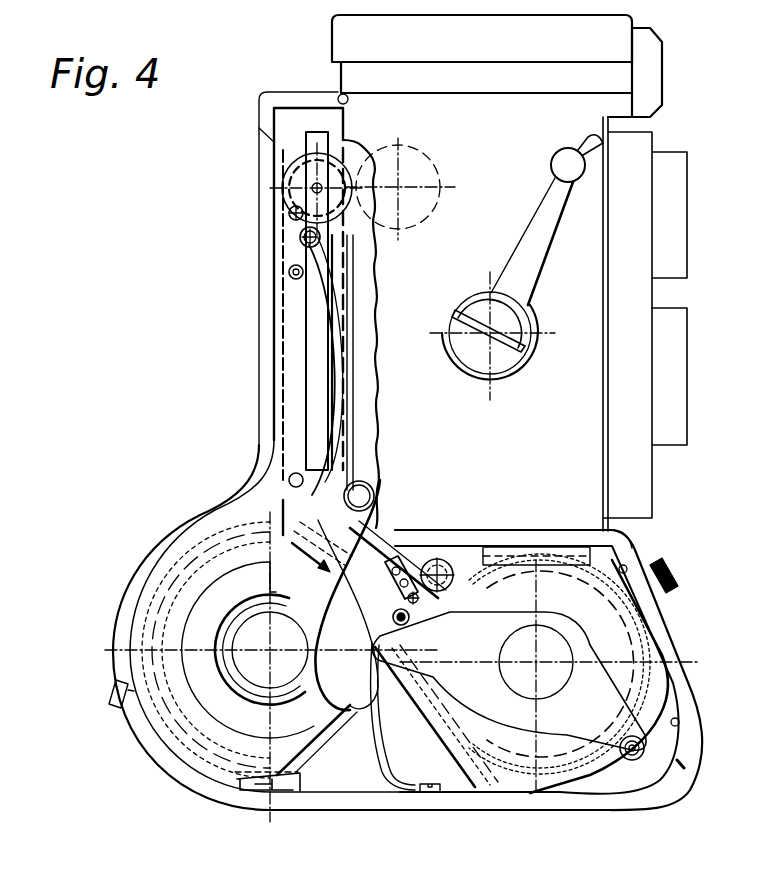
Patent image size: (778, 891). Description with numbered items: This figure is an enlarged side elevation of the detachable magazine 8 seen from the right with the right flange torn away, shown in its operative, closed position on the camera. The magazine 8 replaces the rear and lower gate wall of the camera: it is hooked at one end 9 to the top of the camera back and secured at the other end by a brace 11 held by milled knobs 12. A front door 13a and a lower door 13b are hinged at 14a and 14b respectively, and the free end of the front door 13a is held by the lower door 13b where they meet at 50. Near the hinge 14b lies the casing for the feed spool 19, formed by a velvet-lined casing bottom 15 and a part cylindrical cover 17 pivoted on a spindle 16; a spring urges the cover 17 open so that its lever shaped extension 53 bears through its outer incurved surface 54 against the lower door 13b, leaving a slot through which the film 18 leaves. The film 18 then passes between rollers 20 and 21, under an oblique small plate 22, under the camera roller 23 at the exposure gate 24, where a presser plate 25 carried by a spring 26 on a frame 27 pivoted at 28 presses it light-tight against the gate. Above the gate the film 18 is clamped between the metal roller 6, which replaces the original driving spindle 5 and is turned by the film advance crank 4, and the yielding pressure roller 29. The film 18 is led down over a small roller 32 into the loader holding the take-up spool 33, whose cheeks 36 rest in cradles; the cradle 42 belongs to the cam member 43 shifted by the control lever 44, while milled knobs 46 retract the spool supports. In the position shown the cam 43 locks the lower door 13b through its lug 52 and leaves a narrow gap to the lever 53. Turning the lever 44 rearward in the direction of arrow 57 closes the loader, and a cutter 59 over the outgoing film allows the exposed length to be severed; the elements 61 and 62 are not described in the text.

The film advance crank 4 is at (553, 230).
The driving spindle 5 is at (399, 187).
The metal roller 6 is at (362, 158).
The detachable magazine 8 is at (354, 796).
The hooking end of magazine 9 is at (338, 94).
The brace 11 is at (630, 546).
The milled knobs 12 is at (668, 576).
The front door 13a is at (266, 338).
The lower door 13b is at (452, 800).
The hinge of front door 14a is at (268, 98).
The hinge of lower door 14b is at (672, 741).
The casing bottom 15 is at (650, 648).
The spindle 16 is at (672, 708).
The part cylindrical cover 17 is at (594, 766).
The film 18 is at (350, 474).
The feed spool 19 is at (560, 722).
The roller 20 is at (404, 601).
The roller 21 is at (406, 612).
The small plate 22 is at (370, 548).
The roller 23 is at (384, 516).
The exposure gate 24 is at (357, 403).
The presser plate 25 is at (347, 292).
The spring 26 is at (318, 310).
The frame or fitting 27 is at (296, 372).
The pivot of frame 28 is at (288, 214).
The pressure roller 29 is at (300, 176).
The small roller 32 is at (286, 504).
The take-up spool 33 is at (194, 766).
The cheek or flange 36 is at (332, 734).
The cradle 42 is at (219, 740).
The cam member 43 is at (346, 710).
The control lever 44 is at (376, 494).
The milled knobs 46 is at (245, 666).
The engagement of door ends 50 is at (120, 692).
The lug 52 is at (296, 790).
The lever shaped extension 53 is at (420, 712).
The outer incurved surface 54 is at (535, 796).
The arrow 57 is at (194, 459).
The cutter 59 is at (413, 558).
The belt 61 is at (474, 566).
The belt run 62 is at (448, 572).